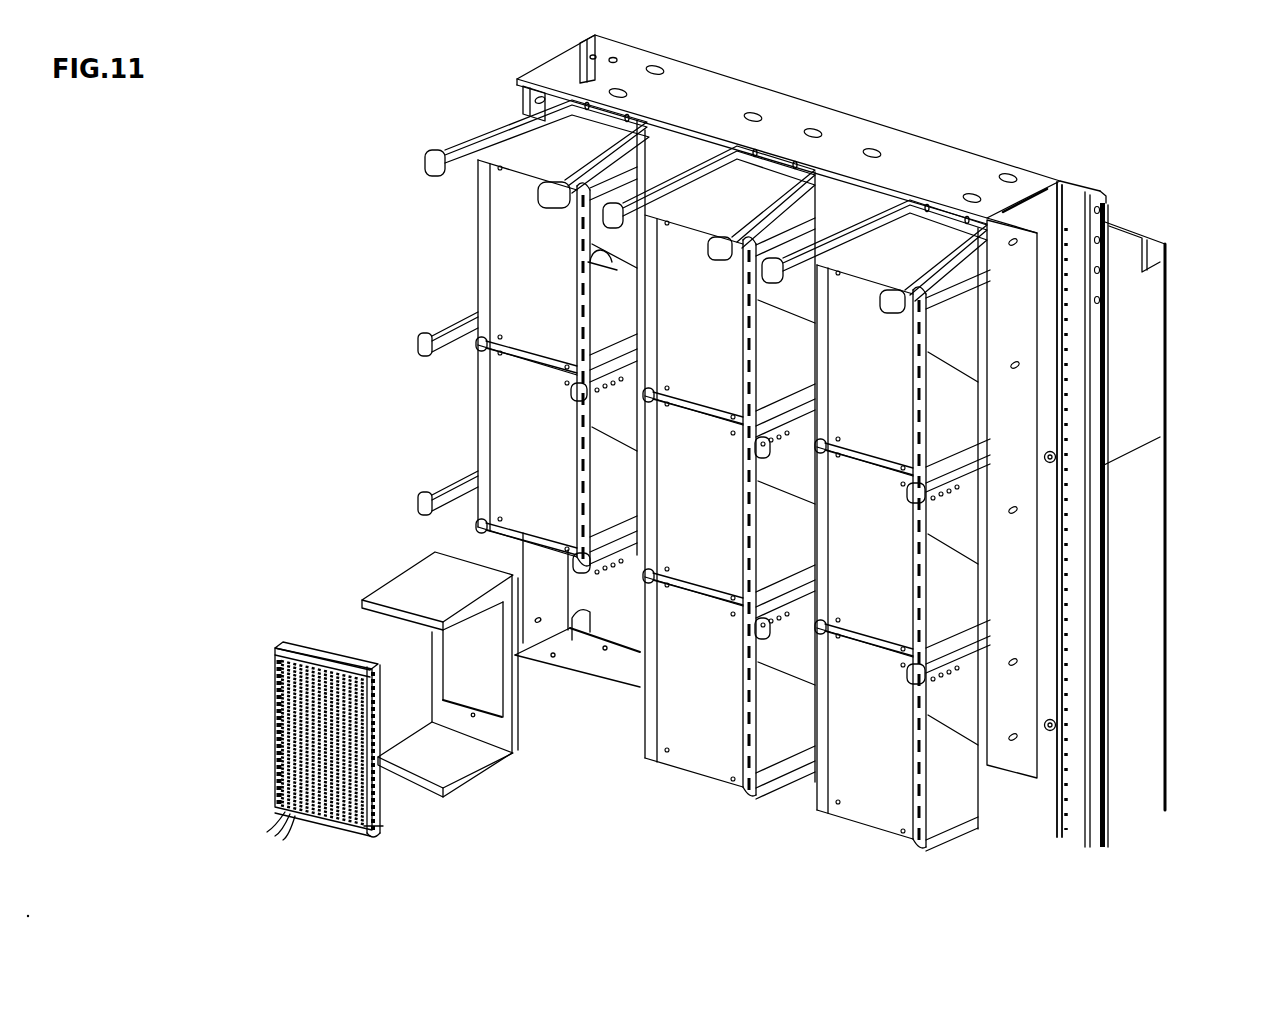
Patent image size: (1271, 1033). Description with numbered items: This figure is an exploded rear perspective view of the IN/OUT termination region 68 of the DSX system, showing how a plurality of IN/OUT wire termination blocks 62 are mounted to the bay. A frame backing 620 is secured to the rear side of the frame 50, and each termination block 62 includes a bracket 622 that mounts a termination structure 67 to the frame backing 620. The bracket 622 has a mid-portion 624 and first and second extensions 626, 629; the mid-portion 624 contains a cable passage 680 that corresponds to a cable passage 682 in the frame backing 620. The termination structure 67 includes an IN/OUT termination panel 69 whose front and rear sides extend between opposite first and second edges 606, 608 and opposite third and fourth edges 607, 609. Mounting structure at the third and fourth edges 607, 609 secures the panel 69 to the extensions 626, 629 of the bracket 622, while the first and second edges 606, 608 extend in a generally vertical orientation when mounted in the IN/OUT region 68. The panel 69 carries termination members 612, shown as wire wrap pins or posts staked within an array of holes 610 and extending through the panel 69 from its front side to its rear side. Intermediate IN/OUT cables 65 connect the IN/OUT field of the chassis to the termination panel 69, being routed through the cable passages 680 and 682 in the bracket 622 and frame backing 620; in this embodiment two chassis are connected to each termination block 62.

The frame 50 is at (700, 108).
The frame backing 620 is at (805, 150).
The intermediate IN/OUT cable 65 is at (600, 262).
The IN/OUT region 68 is at (330, 482).
The termination structure 67 is at (242, 592).
The first extension 626 is at (410, 577).
The third edge 607 is at (313, 650).
The IN/OUT termination panel 69 is at (333, 662).
The cable passage 680 is at (457, 662).
The cable passage 682 is at (603, 610).
The array of holes 610 is at (273, 724).
The first edge 606 is at (275, 772).
The termination members 612 is at (286, 822).
The fourth edge 609 is at (322, 818).
The second edge 608 is at (380, 798).
The second extension 629 is at (465, 780).
The bracket 622 is at (522, 786).
The mid-portion 624 is at (513, 708).
The IN/OUT wire termination block 62 is at (703, 750).